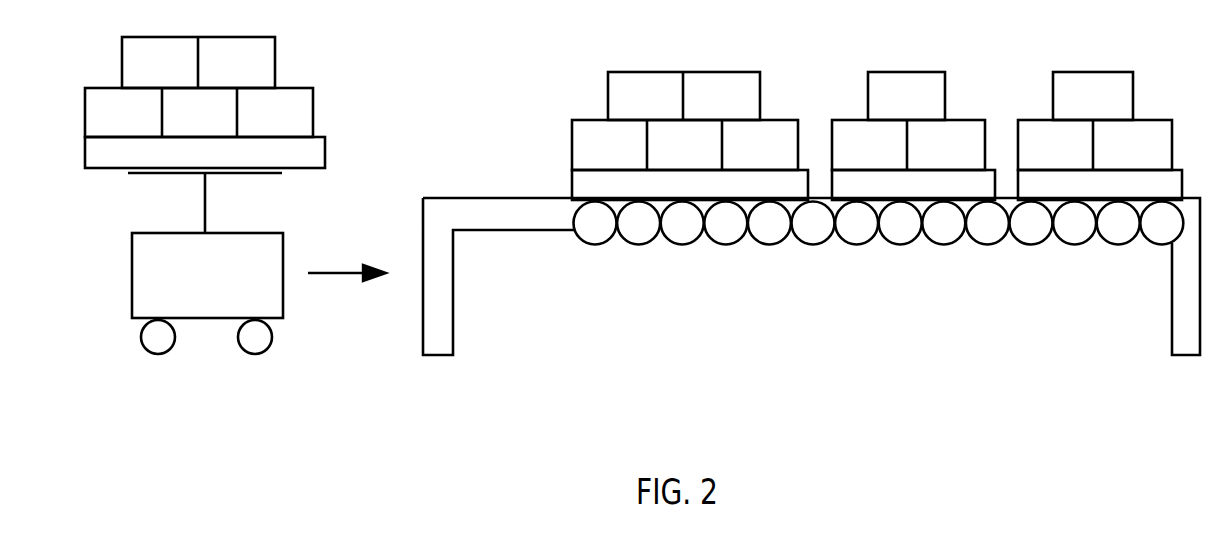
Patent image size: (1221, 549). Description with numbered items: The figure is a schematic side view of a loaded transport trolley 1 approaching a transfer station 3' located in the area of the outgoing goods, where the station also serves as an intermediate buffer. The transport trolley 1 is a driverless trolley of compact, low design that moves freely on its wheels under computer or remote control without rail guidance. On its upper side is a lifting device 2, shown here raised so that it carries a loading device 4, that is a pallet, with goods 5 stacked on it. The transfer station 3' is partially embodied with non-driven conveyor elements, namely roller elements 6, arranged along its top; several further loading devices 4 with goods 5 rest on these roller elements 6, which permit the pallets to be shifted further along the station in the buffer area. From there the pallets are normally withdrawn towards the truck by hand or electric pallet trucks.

The transport trolley 1 is at (132, 280).
The lifting device 2 is at (178, 196).
The transfer station 3' is at (811, 287).
The loading device 4 is at (326, 148).
The goods 5 is at (313, 92).
The roller elements 6 is at (592, 238).